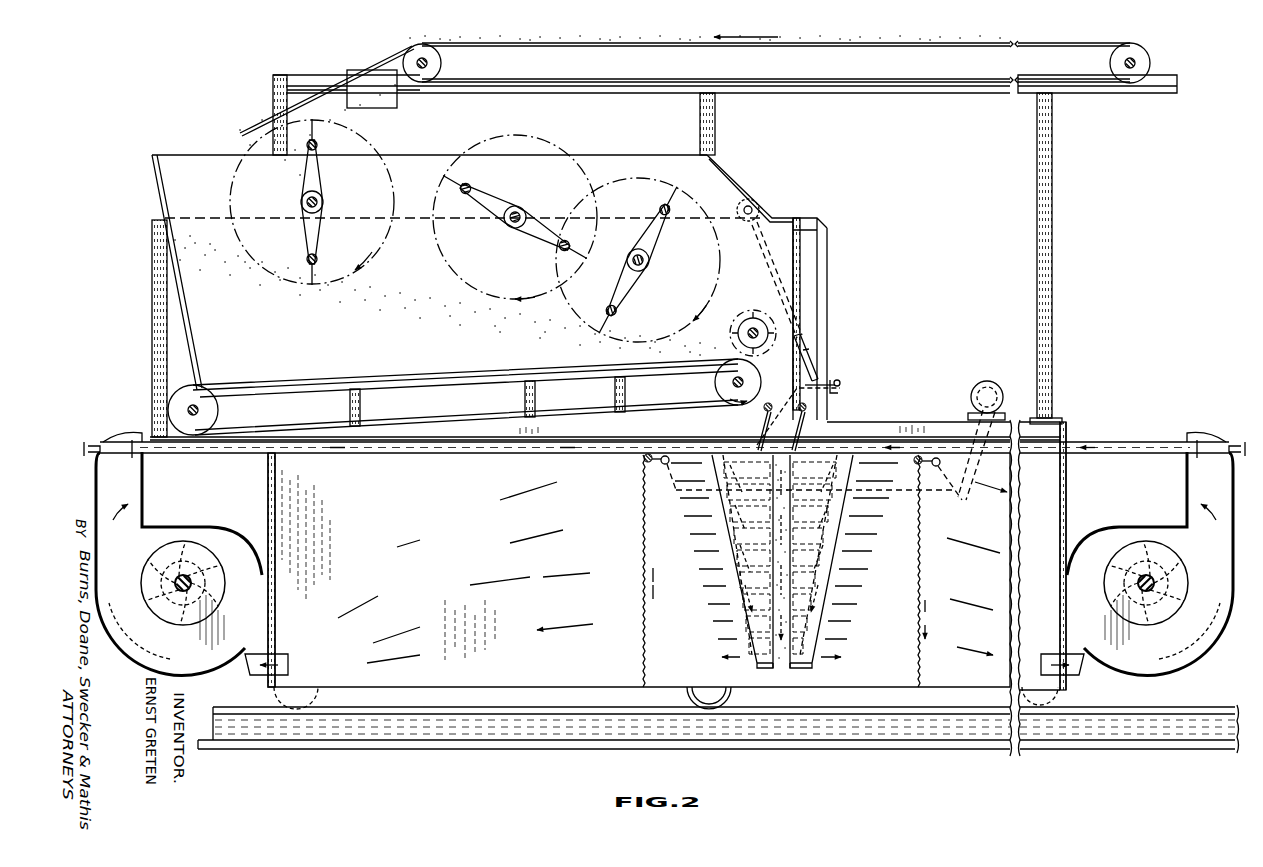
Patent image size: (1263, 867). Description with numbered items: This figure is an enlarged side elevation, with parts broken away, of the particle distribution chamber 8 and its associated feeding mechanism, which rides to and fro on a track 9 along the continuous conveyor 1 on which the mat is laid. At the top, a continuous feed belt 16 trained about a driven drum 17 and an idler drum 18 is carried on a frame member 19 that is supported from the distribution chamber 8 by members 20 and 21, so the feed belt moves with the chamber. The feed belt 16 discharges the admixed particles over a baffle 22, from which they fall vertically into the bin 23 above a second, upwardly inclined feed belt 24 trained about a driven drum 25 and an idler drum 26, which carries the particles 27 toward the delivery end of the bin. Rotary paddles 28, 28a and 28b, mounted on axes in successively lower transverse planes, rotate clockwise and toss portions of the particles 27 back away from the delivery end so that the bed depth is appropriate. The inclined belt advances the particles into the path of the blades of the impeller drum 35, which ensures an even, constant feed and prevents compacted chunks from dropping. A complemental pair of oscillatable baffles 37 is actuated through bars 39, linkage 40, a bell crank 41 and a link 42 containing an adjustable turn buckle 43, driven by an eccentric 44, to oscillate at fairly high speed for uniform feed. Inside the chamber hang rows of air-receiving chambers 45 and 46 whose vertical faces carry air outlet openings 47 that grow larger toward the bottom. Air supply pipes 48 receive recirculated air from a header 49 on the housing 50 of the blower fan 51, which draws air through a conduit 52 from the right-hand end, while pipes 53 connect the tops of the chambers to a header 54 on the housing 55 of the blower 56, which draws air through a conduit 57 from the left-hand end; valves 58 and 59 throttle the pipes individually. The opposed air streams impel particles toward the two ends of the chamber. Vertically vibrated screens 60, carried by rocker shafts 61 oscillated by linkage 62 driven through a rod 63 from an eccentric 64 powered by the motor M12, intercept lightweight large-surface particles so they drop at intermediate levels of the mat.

The continuous conveyor 1 is at (525, 749).
The particle distribution chamber 8 is at (890, 422).
The track 9 is at (445, 707).
The motor M12 is at (972, 397).
The continuous feed belt 16 is at (641, 47).
The driven drum 17 is at (444, 67).
The idler drum 18 is at (1109, 63).
The frame member 19 is at (977, 95).
The member 20 is at (1036, 169).
The member 21 is at (283, 148).
The baffle 22 is at (327, 76).
The bin 23 is at (160, 197).
The upwardly inclined feed belt 24 is at (601, 370).
The driven drum 25 is at (720, 382).
The idler drum 26 is at (216, 411).
The particles 27 is at (322, 330).
The rotary paddle 28 is at (320, 180).
The rotary paddle 28a is at (548, 228).
The rotary paddle 28b is at (657, 223).
The impeller drum 35 is at (758, 324).
The oscillatable baffles 37 is at (762, 437).
The bars 39 is at (826, 412).
The linkage 40 is at (800, 383).
The bell crank 41 is at (842, 388).
The link 42 is at (772, 283).
The adjustable turn buckle 43 is at (810, 352).
The eccentric 44 is at (761, 207).
The air-receiving chambers 45 is at (814, 666).
The air-receiving chambers 46 is at (750, 666).
The air outlet openings 47 is at (786, 664).
The air supply pipes 48 is at (1105, 442).
The header 49 is at (1225, 484).
The housing 50 is at (1105, 525).
The blower fan 51 is at (1122, 588).
The conduit 52 is at (1052, 665).
The pipes 53 is at (440, 459).
The header 54 is at (100, 493).
The housing 55 is at (230, 530).
The blower 56 is at (226, 583).
The conduit 57 is at (284, 672).
The valves 58 is at (1247, 440).
The valves 59 is at (90, 442).
The vertically vibrated screens 60 is at (645, 594).
The rocker shafts 61 is at (667, 456).
The linkage 62 is at (964, 586).
The rod 63 is at (991, 477).
The eccentric 64 is at (1003, 393).